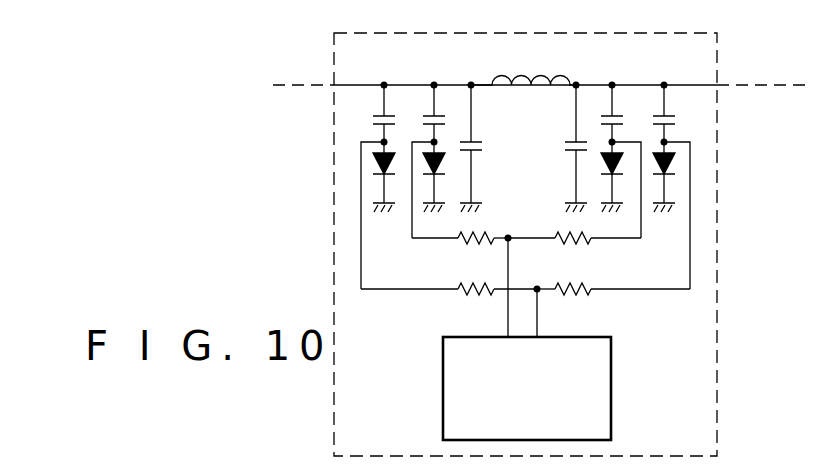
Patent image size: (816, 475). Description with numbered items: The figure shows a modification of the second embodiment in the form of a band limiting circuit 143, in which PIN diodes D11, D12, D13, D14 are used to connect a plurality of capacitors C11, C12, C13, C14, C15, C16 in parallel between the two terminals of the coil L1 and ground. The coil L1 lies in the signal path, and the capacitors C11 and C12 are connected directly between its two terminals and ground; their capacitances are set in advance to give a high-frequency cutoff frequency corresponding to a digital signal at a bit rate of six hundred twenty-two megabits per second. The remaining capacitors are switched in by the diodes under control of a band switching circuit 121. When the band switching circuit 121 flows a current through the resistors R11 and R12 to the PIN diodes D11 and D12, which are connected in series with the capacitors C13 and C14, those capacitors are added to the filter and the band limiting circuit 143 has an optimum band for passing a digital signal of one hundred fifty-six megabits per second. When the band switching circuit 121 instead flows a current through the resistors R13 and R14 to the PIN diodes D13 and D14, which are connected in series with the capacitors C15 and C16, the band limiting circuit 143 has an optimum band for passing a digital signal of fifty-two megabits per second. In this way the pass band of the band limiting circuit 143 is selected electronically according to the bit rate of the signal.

The band limiting circuit 143 is at (376, 32).
The coil L1 is at (545, 77).
The capacitor C11 is at (483, 148).
The capacitor C12 is at (572, 141).
The capacitor C13 is at (422, 118).
The capacitor C14 is at (640, 108).
The capacitor C15 is at (372, 118).
The capacitor C16 is at (691, 108).
The PIN diode D11 is at (422, 170).
The PIN diode D12 is at (623, 165).
The PIN diode D13 is at (372, 157).
The PIN diode D14 is at (682, 163).
The resistor R11 is at (480, 234).
The resistor R12 is at (580, 212).
The resistor R13 is at (481, 283).
The resistor R14 is at (578, 283).
The band switching circuit 121 is at (612, 353).